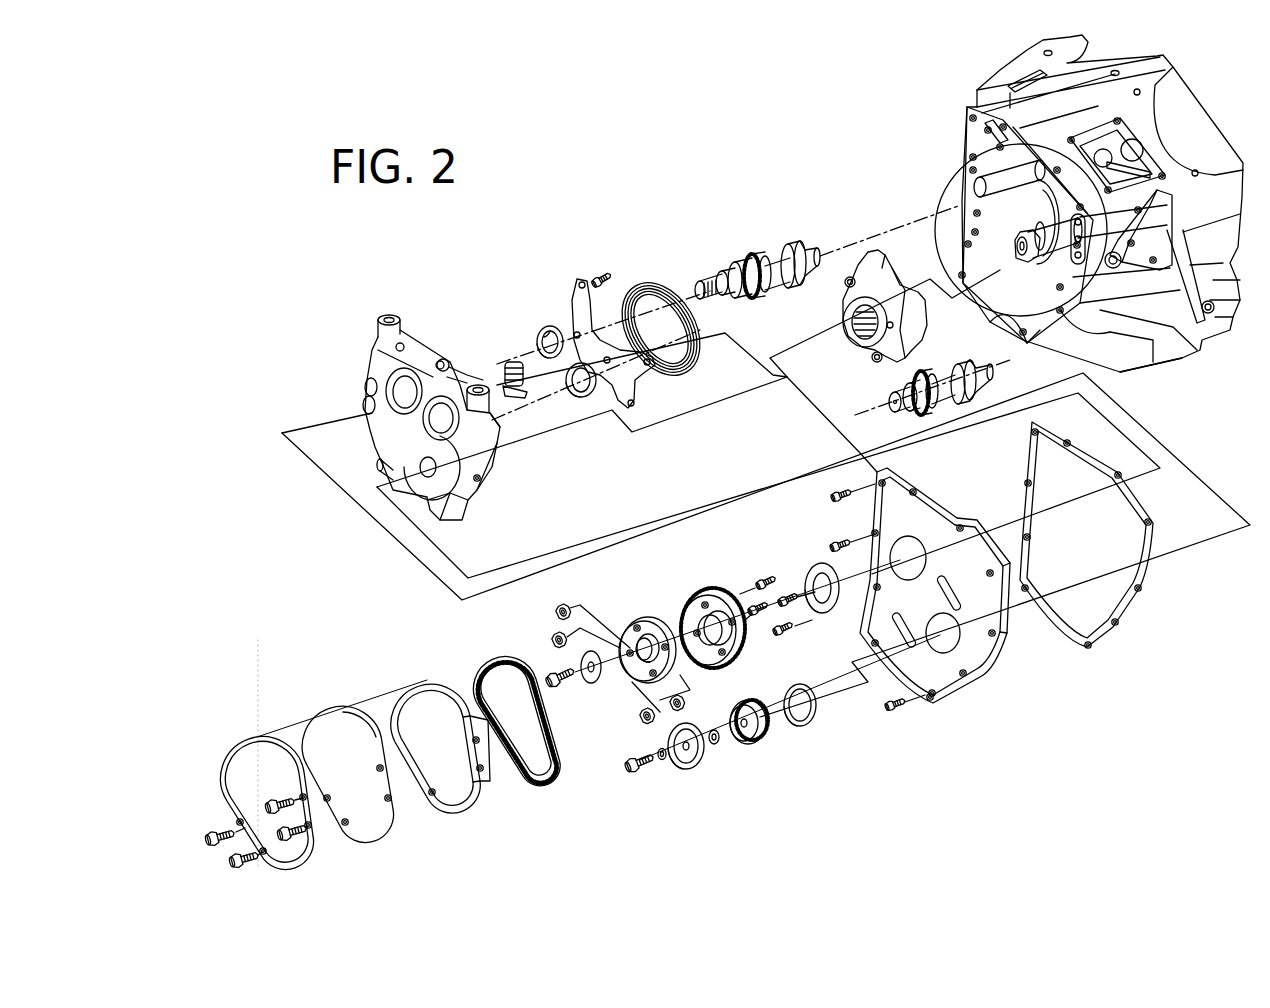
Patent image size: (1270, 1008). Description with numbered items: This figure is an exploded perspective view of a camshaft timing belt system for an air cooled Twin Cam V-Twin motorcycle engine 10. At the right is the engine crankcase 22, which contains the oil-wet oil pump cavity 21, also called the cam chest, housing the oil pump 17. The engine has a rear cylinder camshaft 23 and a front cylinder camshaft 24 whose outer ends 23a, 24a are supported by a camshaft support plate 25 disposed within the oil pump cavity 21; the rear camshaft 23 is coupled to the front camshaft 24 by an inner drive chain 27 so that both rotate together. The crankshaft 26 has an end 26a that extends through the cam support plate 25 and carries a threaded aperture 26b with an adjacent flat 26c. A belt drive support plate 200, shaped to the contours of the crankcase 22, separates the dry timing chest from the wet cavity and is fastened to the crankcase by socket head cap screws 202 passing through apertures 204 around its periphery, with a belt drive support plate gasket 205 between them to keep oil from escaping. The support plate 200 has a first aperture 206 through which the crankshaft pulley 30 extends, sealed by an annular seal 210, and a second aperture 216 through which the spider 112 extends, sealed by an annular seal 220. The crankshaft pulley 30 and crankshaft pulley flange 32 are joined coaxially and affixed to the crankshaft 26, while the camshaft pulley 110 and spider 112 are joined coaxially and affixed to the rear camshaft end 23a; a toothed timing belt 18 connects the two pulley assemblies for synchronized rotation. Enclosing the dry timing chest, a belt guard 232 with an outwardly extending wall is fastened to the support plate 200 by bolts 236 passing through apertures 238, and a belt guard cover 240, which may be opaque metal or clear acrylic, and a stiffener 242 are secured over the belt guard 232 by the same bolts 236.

The motorcycle engine 10 is at (954, 70).
The engine crankcase 22 is at (968, 148).
The crankshaft 26 is at (1038, 158).
The flat 26c is at (1018, 238).
The threaded aperture 26b is at (1012, 234).
The crankshaft end 26a is at (1072, 270).
The oil pump cavity 21 is at (1045, 322).
The rear cylinder camshaft 23 is at (777, 243).
The rear camshaft outer end 23a is at (708, 281).
The chain 27 is at (640, 280).
The oil pump 17 is at (870, 357).
The front cylinder camshaft 24 is at (998, 390).
The front camshaft outer end 24a is at (893, 405).
The camshaft support plate 25 is at (481, 487).
The second aperture 216 is at (922, 548).
The belt drive support plate 200 is at (958, 514).
The belt drive support plate gasket 205 is at (1130, 623).
The first aperture 206 is at (953, 653).
The apertures 204 is at (930, 700).
The socket head cap screws 202 is at (888, 713).
The annular seal 220 is at (822, 565).
The camshaft pulley 110 is at (712, 587).
The spider 112 is at (657, 617).
The timing belt 18 is at (550, 773).
The crankshaft pulley flange 32 is at (693, 768).
The crankshaft pulley 30 is at (758, 745).
The annular seal 210 is at (810, 727).
The stiffener 242 is at (250, 738).
The bolts 236 is at (218, 830).
The belt guard cover 240 is at (380, 842).
The apertures 238 is at (432, 800).
The belt guard 232 is at (475, 810).